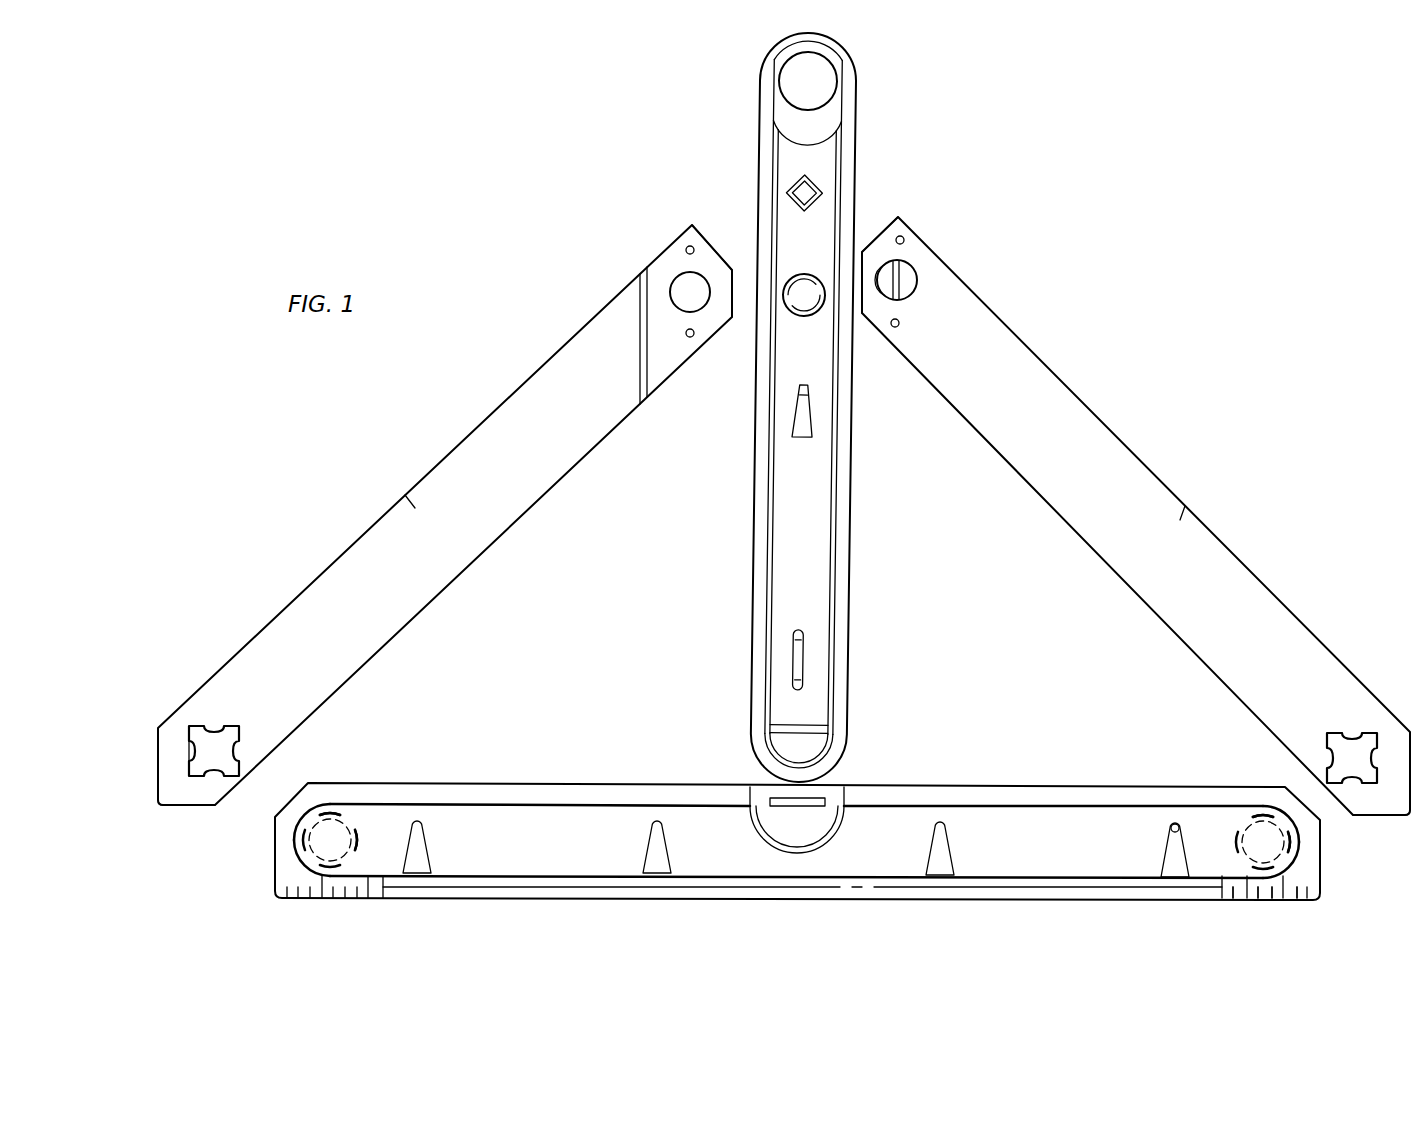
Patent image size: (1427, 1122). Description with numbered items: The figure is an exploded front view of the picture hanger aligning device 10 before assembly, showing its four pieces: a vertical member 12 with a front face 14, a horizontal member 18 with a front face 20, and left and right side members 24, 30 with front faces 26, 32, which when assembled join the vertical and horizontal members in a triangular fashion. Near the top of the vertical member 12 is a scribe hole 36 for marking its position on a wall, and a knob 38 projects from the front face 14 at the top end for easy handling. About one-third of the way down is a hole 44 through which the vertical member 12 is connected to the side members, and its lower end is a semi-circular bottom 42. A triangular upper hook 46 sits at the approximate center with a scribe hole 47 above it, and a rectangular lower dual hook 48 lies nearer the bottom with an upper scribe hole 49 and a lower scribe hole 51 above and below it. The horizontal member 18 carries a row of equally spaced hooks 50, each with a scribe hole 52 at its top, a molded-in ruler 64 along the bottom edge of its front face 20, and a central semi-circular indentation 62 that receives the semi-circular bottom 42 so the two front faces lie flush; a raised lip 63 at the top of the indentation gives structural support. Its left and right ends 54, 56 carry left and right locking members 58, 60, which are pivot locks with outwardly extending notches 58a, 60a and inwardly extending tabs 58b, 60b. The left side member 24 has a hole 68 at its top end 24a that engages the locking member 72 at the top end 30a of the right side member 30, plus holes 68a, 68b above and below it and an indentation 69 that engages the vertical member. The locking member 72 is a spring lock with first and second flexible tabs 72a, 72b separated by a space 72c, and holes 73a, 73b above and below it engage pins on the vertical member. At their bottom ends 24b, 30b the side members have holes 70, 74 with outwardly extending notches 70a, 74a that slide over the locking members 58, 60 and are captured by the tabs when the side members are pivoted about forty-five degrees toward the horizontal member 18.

The picture hanger aligning device 10 is at (978, 145).
The vertical member 12 is at (857, 106).
The front face 14 is at (822, 145).
The horizontal member 18 is at (865, 895).
The front face 20 is at (823, 862).
The left side member 24 is at (468, 436).
The top end 24a is at (705, 238).
The bottom end 24b is at (163, 808).
The front face 26 is at (405, 495).
The right side member 30 is at (1120, 440).
The top end 30a is at (895, 225).
The bottom end 30b is at (1402, 816).
The front face 32 is at (1185, 506).
The scribe hole 36 is at (797, 187).
The knob 38 is at (795, 75).
The semi-circular bottom 42 is at (762, 770).
The hole 44 is at (802, 300).
The triangular upper hook 46 is at (812, 428).
The scribe hole 47 is at (806, 386).
The rectangular lower dual hook 48 is at (795, 655).
The upper scribe hole 49 is at (803, 630).
The hooks 50 is at (1172, 856).
The lower scribe hole 51 is at (800, 690).
The scribe holes 52 is at (1170, 828).
The left end 54 is at (276, 880).
The right end 56 is at (1320, 858).
The left locking member 58 is at (320, 842).
The outwardly extending notch 58a is at (330, 808).
The inwardly extending tab 58b is at (355, 822).
The right locking member 60 is at (1275, 846).
The outwardly extending notch 60a is at (1262, 810).
The inwardly extending tab 60b is at (1292, 824).
The semi-circular indentation 62 is at (771, 845).
The raised lip 63 is at (820, 800).
The molded-in ruler 64 is at (1275, 898).
The hole 68 is at (680, 290).
The hole 68a is at (685, 250).
The hole 68b is at (694, 340).
The indentation 69 is at (642, 340).
The hole 70 is at (222, 745).
The outwardly extending notch 70a is at (188, 760).
The locking member 72 is at (912, 285).
The first flexible tab 72a is at (896, 288).
The second flexible tab 72b is at (896, 300).
The space 72c is at (908, 282).
The hole 73a is at (905, 242).
The hole 73b is at (893, 330).
The hole 74 is at (1362, 752).
The outwardly extending notch 74a is at (1340, 735).